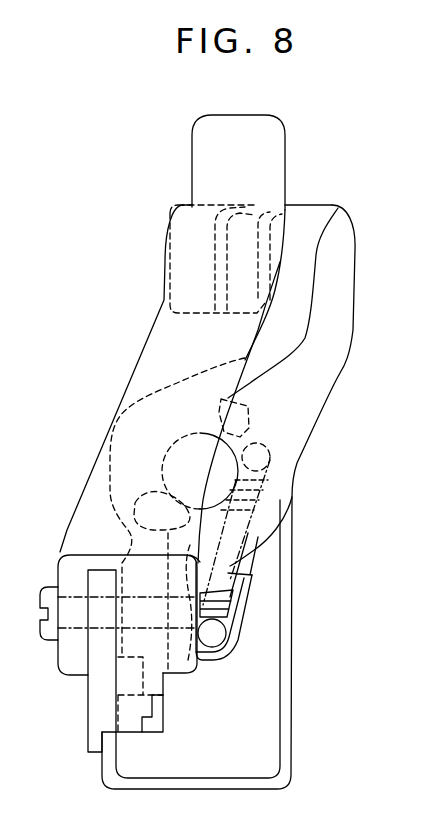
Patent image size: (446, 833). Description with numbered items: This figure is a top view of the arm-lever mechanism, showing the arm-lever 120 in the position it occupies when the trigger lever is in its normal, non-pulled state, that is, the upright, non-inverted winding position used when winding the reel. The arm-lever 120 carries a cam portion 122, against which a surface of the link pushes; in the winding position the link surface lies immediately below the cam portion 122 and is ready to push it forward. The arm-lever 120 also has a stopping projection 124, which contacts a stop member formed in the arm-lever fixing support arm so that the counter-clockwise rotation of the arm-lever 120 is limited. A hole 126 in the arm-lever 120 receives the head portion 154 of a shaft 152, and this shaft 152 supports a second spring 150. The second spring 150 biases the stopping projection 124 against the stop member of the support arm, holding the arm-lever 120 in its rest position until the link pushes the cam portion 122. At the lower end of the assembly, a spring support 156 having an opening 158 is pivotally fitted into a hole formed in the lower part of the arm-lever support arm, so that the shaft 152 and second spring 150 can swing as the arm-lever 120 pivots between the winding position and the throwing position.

The arm-lever 120 is at (342, 240).
The cam portion 122 is at (150, 516).
The stopping projection 124 is at (252, 408).
The hole 126 is at (262, 444).
The head portion 154 is at (255, 458).
The shaft 152 is at (200, 562).
The second spring 150 is at (240, 586).
The spring support 156 is at (243, 598).
The opening 158 is at (200, 661).